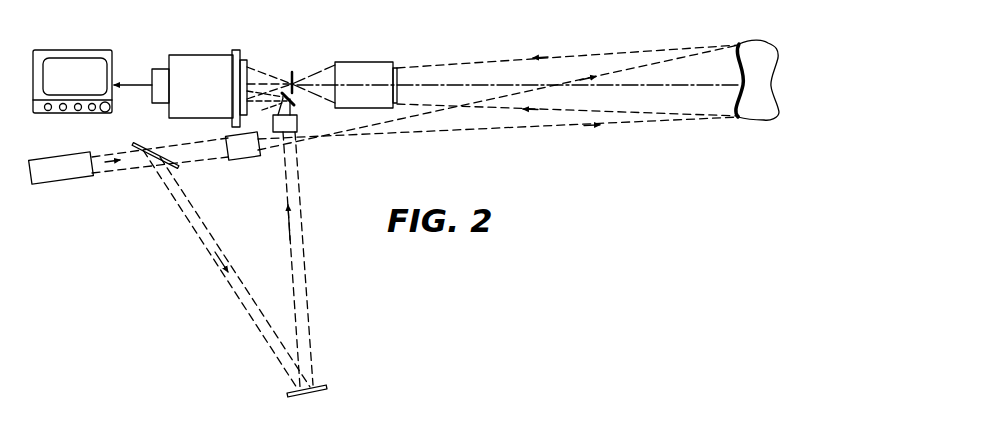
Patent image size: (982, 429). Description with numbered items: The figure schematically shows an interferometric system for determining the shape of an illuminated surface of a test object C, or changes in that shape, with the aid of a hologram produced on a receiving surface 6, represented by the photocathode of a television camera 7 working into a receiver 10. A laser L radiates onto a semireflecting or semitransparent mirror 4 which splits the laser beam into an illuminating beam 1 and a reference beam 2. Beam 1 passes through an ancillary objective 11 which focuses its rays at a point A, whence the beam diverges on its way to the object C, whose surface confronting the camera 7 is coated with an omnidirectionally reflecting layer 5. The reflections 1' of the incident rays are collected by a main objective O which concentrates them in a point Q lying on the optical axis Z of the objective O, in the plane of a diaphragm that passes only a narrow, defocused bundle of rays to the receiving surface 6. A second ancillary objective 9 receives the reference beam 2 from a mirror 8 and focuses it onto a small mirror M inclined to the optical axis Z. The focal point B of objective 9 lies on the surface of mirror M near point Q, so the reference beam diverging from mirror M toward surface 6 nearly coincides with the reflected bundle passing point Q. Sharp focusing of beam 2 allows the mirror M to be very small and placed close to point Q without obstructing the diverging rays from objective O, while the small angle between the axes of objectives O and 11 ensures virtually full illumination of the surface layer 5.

The receiver 10 is at (57, 50).
The television camera 7 is at (197, 55).
The receiving surface 6 is at (245, 58).
The point Q is at (292, 73).
The small mirror M is at (295, 100).
The focal point B is at (268, 110).
The ancillary objective 9 is at (293, 127).
The reference beam 2 is at (300, 275).
The mirror 8 is at (327, 391).
The semireflecting mirror 4 is at (140, 145).
The laser L is at (53, 183).
The ancillary objective 11 is at (243, 158).
The point of divergence A is at (328, 133).
The illuminating beam 1 is at (568, 106).
The reflections 1' is at (518, 61).
The optical axis Z is at (460, 83).
The main objective O is at (366, 62).
The test object C is at (764, 93).
The omnidirectionally reflecting layer 5 is at (733, 63).